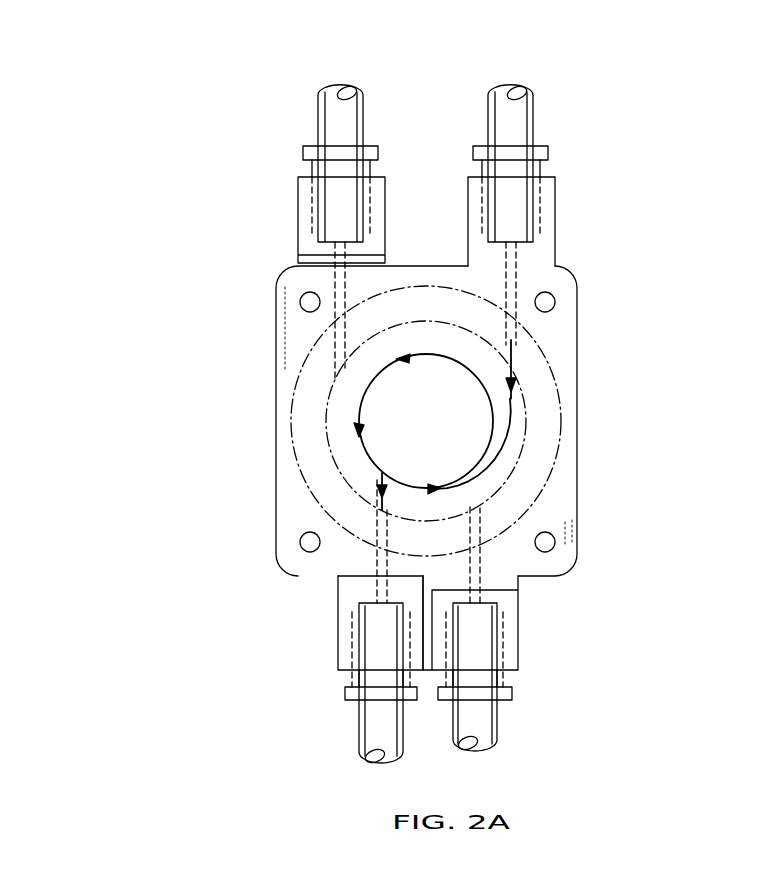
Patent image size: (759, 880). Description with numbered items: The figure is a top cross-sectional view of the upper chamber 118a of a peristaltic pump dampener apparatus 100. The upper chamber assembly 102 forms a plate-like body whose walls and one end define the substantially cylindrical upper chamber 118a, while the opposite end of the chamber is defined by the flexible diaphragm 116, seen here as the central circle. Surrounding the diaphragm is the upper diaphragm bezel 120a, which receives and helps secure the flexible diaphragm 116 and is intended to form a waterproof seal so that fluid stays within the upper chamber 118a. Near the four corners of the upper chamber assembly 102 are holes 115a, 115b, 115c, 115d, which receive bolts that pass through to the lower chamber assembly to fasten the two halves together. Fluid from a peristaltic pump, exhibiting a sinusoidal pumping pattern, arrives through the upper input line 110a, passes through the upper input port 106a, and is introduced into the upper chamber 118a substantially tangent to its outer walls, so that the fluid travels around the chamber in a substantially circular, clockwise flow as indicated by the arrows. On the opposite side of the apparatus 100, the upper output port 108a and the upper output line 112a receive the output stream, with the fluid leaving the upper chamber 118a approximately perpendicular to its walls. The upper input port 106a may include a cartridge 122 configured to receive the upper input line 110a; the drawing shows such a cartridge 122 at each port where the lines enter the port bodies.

The peristaltic pump dampener apparatus 100 is at (137, 197).
The upper chamber assembly 102 is at (613, 360).
The upper input port 106a is at (555, 217).
The upper output port 108a is at (338, 618).
The upper input line 110a is at (535, 132).
The upper output line 112a is at (360, 728).
The hole 115a is at (545, 542).
The hole 115b is at (310, 542).
The hole 115c is at (310, 301).
The hole 115d is at (545, 302).
The flexible diaphragm 116 is at (450, 423).
The upper chamber 118a is at (325, 455).
The upper diaphragm bezel 120a is at (293, 412).
The cartridge 122 is at (548, 152).